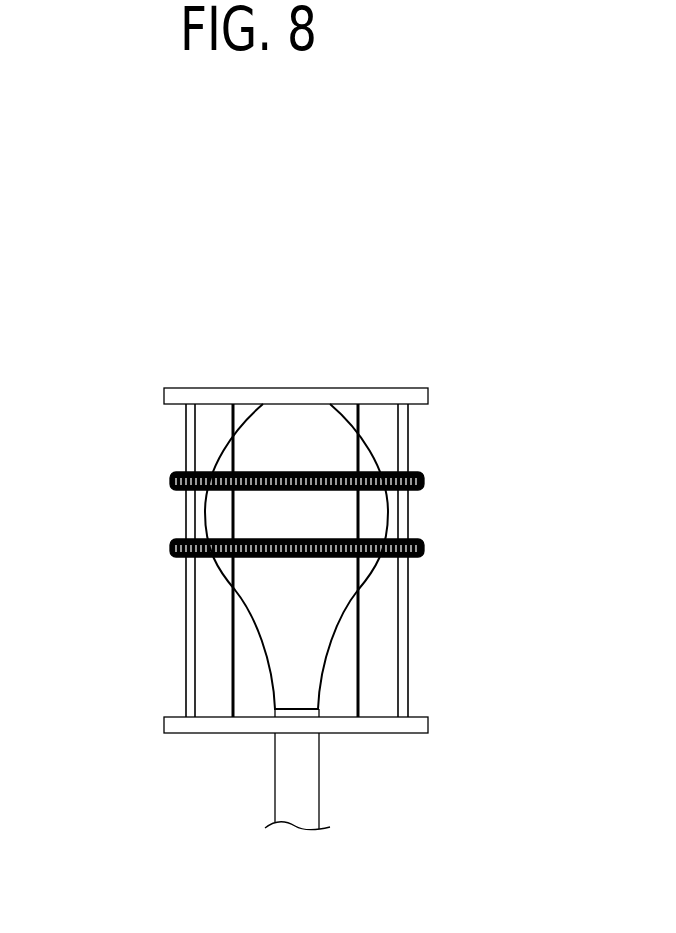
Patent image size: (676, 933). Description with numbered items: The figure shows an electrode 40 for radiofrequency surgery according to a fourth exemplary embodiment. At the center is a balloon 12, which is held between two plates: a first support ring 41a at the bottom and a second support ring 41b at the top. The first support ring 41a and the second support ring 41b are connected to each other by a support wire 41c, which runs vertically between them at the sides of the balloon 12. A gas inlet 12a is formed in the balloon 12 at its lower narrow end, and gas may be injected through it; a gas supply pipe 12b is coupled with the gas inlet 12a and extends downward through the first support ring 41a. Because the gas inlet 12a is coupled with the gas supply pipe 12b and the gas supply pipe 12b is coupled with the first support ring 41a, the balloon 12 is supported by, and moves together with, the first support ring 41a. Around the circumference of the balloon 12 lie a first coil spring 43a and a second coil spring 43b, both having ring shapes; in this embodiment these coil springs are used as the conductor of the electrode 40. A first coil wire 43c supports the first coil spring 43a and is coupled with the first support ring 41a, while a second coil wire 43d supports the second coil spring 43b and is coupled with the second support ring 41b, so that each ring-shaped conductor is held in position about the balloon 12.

The electrode for radiofrequency surgery 40 is at (437, 357).
The balloon 12 is at (293, 427).
The gas inlet 12a is at (297, 708).
The gas supply pipe 12b is at (298, 783).
The first support ring 41a is at (428, 725).
The second support ring 41b is at (428, 395).
The support wire 41c is at (399, 441).
The first coil spring 43a is at (169, 547).
The second coil spring 43b is at (169, 485).
The first coil wire 43c is at (233, 645).
The second coil wire 43d is at (232, 414).